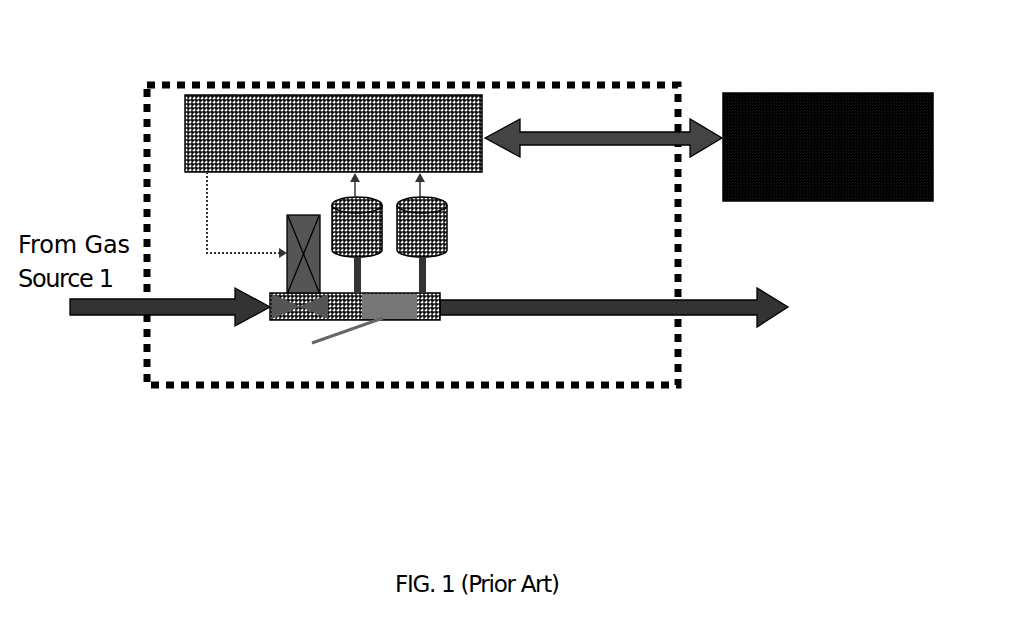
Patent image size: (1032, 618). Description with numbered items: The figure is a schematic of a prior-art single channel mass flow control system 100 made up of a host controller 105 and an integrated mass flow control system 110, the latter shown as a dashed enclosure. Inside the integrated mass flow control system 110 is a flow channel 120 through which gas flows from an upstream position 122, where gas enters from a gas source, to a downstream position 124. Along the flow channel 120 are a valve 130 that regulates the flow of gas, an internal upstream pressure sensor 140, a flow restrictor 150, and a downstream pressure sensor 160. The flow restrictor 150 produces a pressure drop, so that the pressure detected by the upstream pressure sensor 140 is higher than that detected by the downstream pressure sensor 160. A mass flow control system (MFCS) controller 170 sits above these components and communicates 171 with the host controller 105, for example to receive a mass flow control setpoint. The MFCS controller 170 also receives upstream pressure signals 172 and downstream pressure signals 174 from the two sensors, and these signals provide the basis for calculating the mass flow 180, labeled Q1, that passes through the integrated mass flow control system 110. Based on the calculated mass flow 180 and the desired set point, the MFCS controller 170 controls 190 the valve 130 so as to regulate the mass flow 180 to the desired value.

The single channel mass flow control system 100 is at (417, 22).
The host controller 105 is at (805, 87).
The integrated mass flow control system 110 is at (612, 387).
The flow channel 120 is at (430, 322).
The upstream position 122 is at (138, 315).
The downstream position 124 is at (683, 315).
The valve 130 is at (285, 232).
The upstream pressure sensor 140 is at (370, 257).
The flow restrictor 150 is at (387, 318).
The downstream pressure sensor 160 is at (449, 232).
The mass flow control system (MFCS) controller 170 is at (487, 116).
The communication 171 is at (603, 143).
The upstream pressure signals 172 is at (370, 184).
The downstream pressure signals 174 is at (435, 184).
The mass flow 180 is at (784, 274).
The control 190 is at (222, 215).